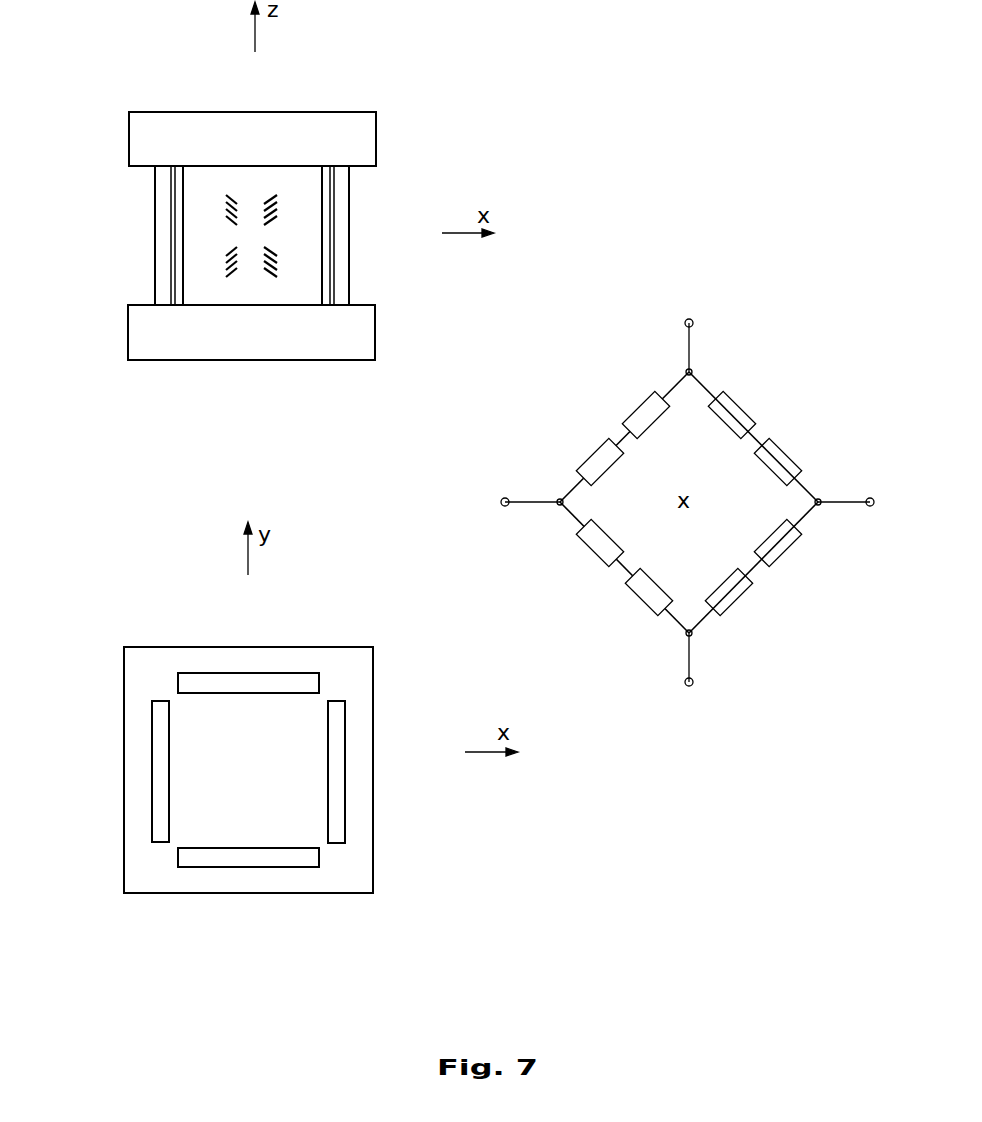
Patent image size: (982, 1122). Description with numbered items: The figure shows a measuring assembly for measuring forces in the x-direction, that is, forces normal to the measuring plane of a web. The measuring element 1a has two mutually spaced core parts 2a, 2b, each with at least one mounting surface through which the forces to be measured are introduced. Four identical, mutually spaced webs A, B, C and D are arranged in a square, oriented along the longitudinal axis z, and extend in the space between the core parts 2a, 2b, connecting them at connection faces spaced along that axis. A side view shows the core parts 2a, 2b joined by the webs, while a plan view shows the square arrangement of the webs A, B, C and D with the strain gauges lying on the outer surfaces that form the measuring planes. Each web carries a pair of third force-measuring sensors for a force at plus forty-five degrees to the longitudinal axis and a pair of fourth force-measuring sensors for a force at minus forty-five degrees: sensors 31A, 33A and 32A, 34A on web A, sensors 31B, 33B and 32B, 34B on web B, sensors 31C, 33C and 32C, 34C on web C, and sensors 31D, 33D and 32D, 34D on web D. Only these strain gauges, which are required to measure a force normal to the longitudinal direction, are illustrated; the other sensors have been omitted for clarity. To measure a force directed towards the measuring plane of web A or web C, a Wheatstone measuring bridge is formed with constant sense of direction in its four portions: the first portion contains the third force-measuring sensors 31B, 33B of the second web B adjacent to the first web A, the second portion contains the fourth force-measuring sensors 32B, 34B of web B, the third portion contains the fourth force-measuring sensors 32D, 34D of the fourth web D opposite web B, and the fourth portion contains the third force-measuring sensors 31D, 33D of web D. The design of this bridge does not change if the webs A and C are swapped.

The measuring element 1a is at (436, 60).
The core part 2a is at (220, 128).
The core part 2b is at (358, 332).
The web A is at (340, 242).
The web B is at (238, 285).
The web C is at (160, 238).
The web D is at (248, 699).
The third force-measuring sensor 31A is at (347, 807).
The fourth force-measuring sensor 32A is at (350, 735).
The third force-measuring sensor 33A is at (352, 752).
The fourth force-measuring sensor 34A is at (348, 790).
The third force-measuring sensor 31B is at (226, 259).
The fourth force-measuring sensor 32B is at (278, 265).
The third force-measuring sensor 33B is at (280, 205).
The fourth force-measuring sensor 34B is at (225, 207).
The third force-measuring sensor 31C is at (143, 733).
The fourth force-measuring sensor 32C is at (143, 805).
The third force-measuring sensor 33C is at (142, 790).
The fourth force-measuring sensor 34C is at (140, 743).
The third force-measuring sensor 31D is at (576, 546).
The fourth force-measuring sensor 32D is at (626, 412).
The third force-measuring sensor 33D is at (625, 596).
The fourth force-measuring sensor 34D is at (576, 459).